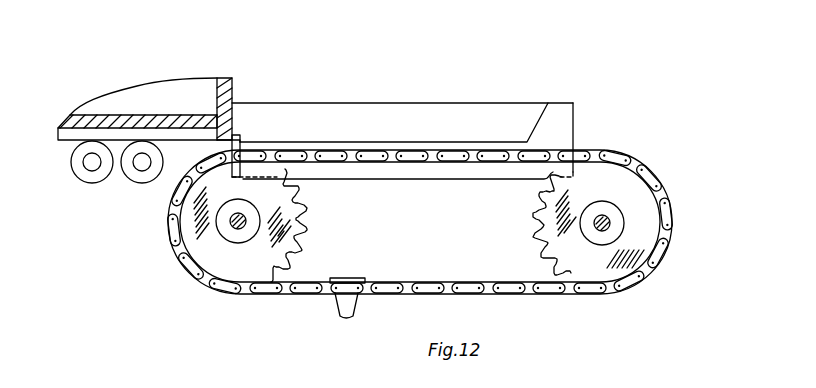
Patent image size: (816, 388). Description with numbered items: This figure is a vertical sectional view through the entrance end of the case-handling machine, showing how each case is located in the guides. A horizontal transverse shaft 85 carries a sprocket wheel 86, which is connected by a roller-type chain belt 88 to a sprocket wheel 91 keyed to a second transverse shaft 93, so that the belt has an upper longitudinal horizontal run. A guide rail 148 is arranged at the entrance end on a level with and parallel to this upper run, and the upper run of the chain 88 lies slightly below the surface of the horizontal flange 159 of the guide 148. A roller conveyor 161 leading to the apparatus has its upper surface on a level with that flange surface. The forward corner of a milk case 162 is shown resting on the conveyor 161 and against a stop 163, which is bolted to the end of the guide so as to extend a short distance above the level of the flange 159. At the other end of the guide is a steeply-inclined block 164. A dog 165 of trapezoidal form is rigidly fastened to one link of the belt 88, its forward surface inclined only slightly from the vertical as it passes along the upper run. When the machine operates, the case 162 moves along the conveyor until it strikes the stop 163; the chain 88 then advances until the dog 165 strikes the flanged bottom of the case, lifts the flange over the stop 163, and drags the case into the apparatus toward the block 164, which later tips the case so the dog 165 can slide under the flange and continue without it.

The horizontal transverse shaft 85 is at (236, 229).
The sprocket wheel 86 is at (308, 230).
The roller-type chain belt 88 is at (470, 285).
The sprocket wheel 91 is at (637, 201).
The transverse shaft 93 is at (608, 228).
The guide rail 148 is at (383, 113).
The horizontal flange 159 is at (453, 140).
The roller conveyor 161 is at (75, 163).
The milk case 162 is at (187, 92).
The stop 163 is at (235, 137).
The steeply-inclined block 164 is at (558, 115).
The dog 165 is at (355, 303).